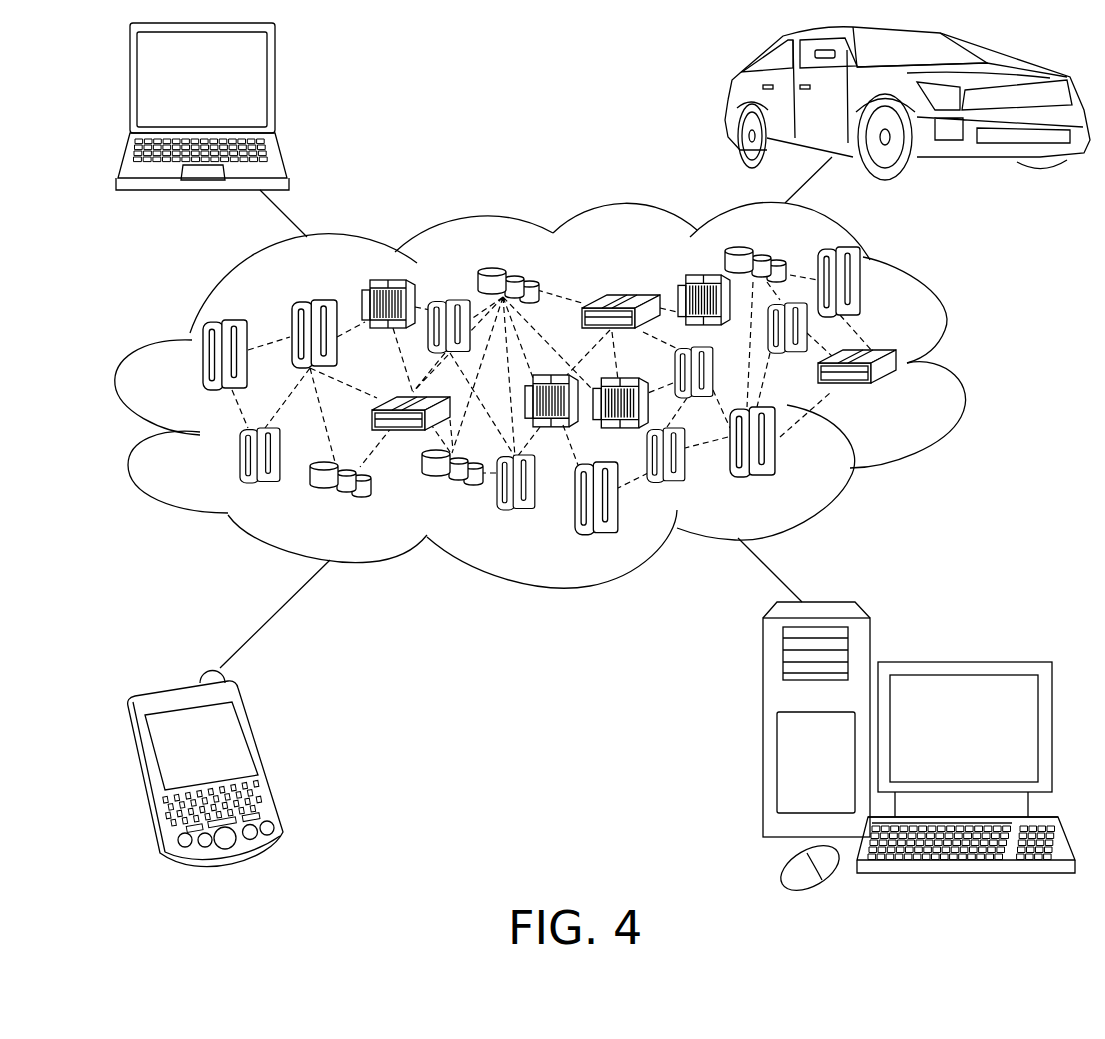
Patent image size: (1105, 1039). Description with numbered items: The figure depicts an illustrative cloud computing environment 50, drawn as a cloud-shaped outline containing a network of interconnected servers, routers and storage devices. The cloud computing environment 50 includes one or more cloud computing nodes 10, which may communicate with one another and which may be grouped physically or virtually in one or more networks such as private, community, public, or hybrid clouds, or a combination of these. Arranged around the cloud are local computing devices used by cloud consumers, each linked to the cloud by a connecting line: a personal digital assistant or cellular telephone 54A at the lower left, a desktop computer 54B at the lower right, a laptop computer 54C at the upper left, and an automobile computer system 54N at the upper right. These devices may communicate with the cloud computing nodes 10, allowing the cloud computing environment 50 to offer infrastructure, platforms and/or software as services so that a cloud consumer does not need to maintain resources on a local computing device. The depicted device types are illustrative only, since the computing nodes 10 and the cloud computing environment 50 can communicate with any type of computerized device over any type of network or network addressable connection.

The cloud computing node 10 is at (906, 402).
The cloud computing environment 50 is at (963, 367).
The personal digital assistant (PDA) or cellular telephone 54A is at (265, 757).
The desktop computer 54B is at (963, 660).
The laptop computer 54C is at (277, 90).
The automobile computer system 54N is at (735, 107).